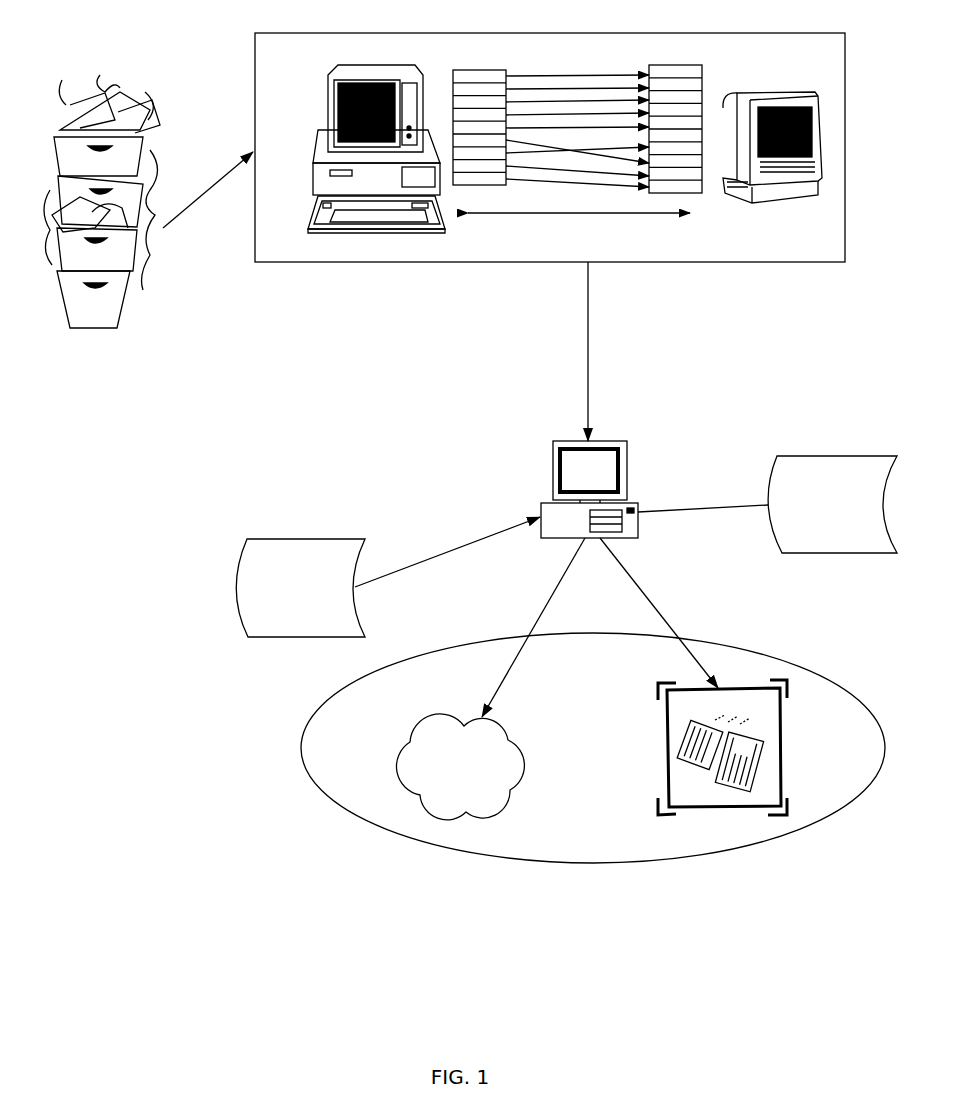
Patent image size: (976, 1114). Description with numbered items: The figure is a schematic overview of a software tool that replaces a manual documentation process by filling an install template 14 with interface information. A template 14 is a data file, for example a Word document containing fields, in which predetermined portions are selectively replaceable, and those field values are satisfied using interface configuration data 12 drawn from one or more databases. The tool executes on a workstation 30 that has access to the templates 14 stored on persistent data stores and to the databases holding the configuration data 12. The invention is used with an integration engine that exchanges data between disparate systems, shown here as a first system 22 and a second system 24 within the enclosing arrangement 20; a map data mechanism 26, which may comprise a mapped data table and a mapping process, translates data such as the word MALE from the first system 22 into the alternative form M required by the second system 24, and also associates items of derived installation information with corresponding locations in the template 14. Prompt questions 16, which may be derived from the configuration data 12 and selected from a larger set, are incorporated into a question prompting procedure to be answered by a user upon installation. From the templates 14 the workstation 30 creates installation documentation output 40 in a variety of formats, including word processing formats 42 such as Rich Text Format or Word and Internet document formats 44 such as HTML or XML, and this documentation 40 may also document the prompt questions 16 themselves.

The interface configuration data 12 is at (88, 330).
The install template 14 is at (300, 539).
The prompt questions 16 is at (832, 456).
The document processing system 20 is at (460, 263).
The first system 22 is at (310, 92).
The second system 24 is at (822, 113).
The map data mechanism 26 is at (588, 199).
The workstation 30 is at (642, 480).
The installation documentation output 40 is at (612, 878).
The word processing formats 42 is at (717, 807).
The Internet document formats 44 is at (483, 815).